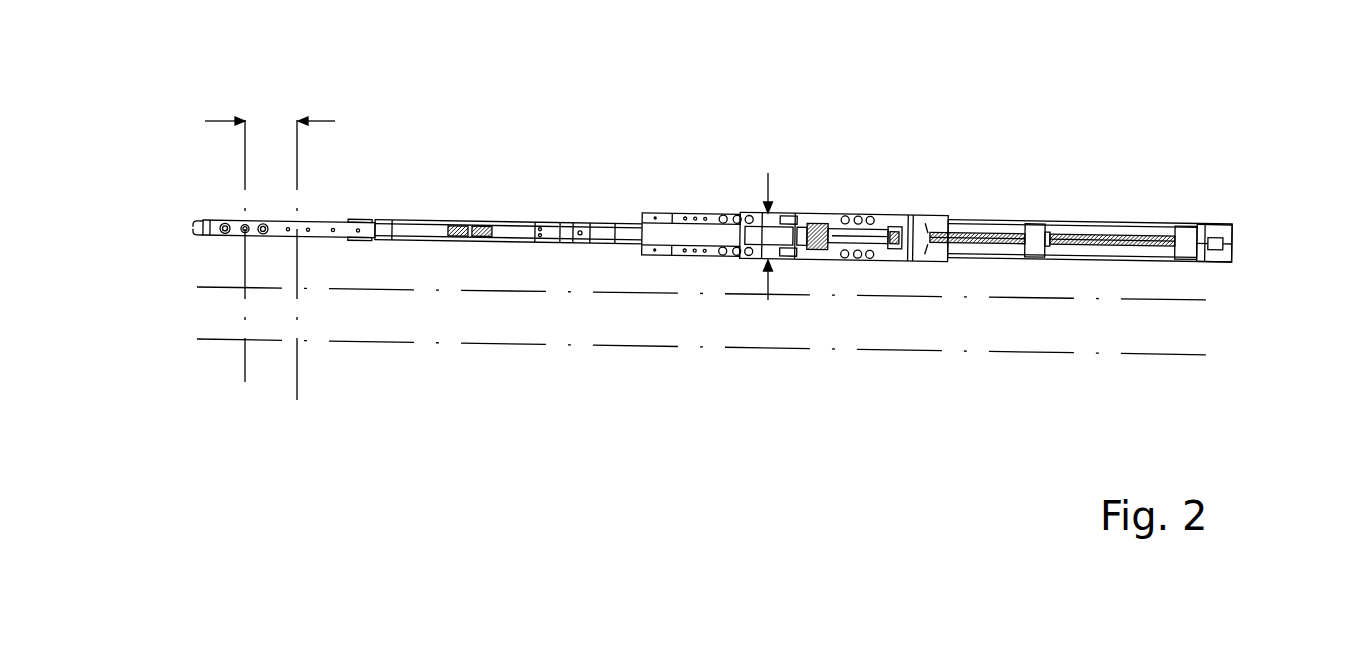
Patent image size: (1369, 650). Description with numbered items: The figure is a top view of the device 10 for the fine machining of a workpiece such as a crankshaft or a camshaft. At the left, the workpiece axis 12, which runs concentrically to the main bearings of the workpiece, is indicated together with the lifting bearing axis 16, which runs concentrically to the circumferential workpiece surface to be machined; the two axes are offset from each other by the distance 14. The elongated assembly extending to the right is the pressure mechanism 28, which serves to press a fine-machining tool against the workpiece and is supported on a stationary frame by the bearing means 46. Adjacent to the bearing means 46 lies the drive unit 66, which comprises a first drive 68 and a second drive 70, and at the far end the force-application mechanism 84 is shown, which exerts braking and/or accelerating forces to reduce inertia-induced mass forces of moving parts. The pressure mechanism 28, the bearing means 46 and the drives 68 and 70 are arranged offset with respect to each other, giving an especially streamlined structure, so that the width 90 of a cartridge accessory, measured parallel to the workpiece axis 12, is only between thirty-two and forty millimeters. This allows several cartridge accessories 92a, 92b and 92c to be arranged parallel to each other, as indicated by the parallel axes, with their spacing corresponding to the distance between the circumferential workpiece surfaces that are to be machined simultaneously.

The device 10 is at (694, 109).
The workpiece axis 12 is at (298, 206).
The distance 14 is at (322, 117).
The lifting bearing axis 16 is at (245, 372).
The pressure mechanism 28 is at (441, 186).
The bearing means 46 is at (820, 176).
The drive unit 66 is at (1165, 150).
The first drive 68 is at (1108, 228).
The second drive 70 is at (995, 225).
The force-application mechanism 84 is at (1251, 217).
The width 90 is at (768, 182).
The cartridge accessory 92a is at (1264, 246).
The cartridge accessory 92b is at (1262, 304).
The cartridge accessory 92c is at (1256, 354).